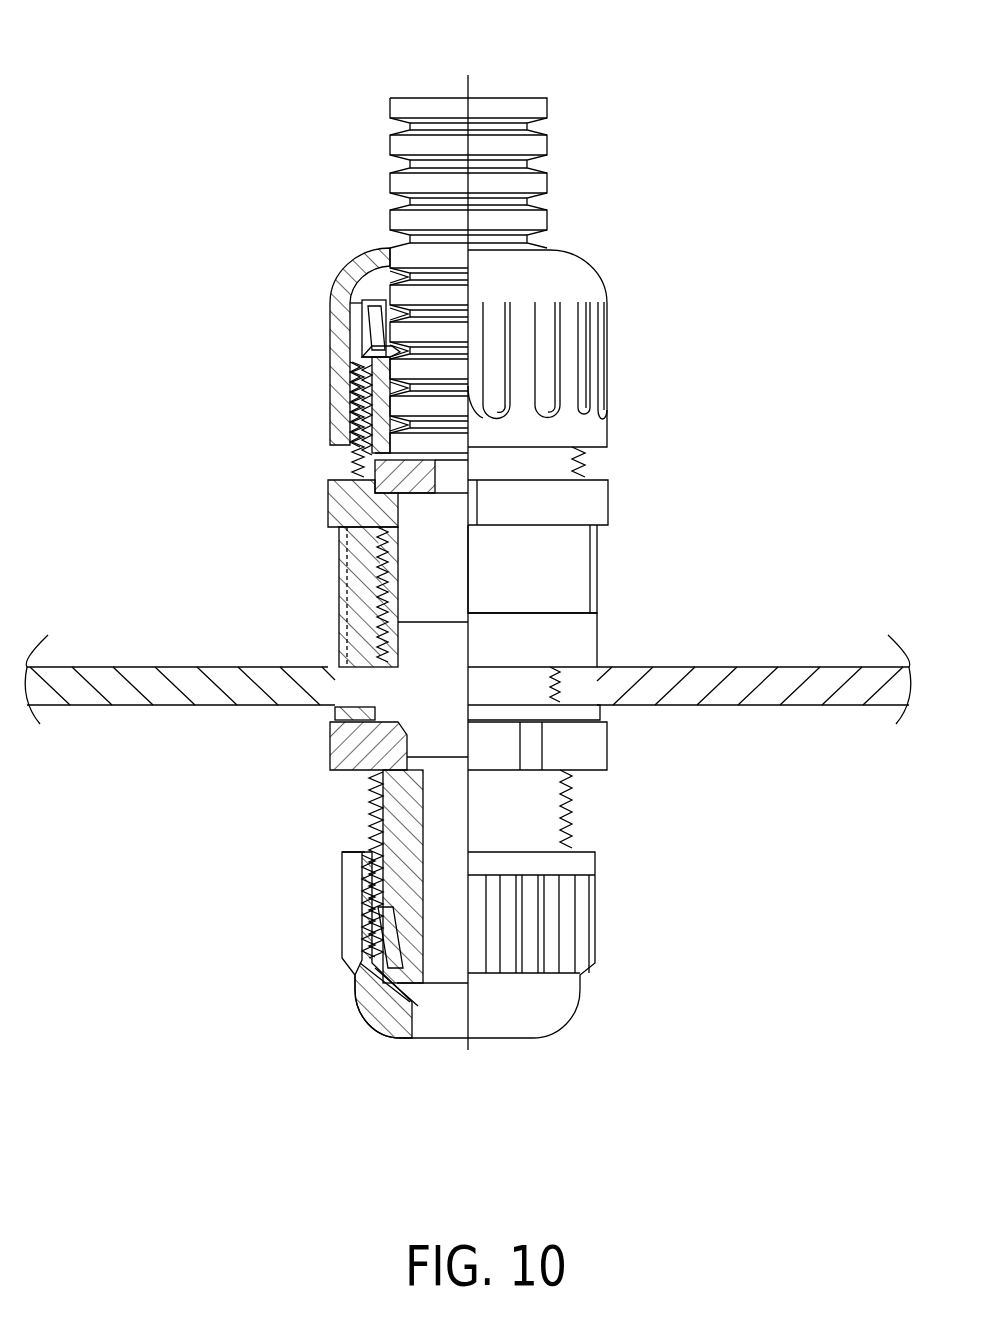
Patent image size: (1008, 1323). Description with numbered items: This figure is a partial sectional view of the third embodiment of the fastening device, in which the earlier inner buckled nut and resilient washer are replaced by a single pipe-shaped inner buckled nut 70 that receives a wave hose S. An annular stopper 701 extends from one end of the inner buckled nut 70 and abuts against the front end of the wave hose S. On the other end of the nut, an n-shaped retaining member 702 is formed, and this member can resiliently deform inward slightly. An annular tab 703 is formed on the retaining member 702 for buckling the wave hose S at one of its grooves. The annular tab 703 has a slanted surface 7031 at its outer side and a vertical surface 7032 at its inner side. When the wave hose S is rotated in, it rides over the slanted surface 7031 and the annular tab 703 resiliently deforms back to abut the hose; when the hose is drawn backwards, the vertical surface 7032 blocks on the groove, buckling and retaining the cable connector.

The wave hose S is at (422, 108).
The inner buckled nut 70 is at (378, 409).
The annular stopper 701 is at (360, 453).
The retaining member 702 is at (377, 262).
The annular tab 703 is at (360, 347).
The slanted surface 7031 is at (367, 312).
The vertical surface 7032 is at (367, 370).